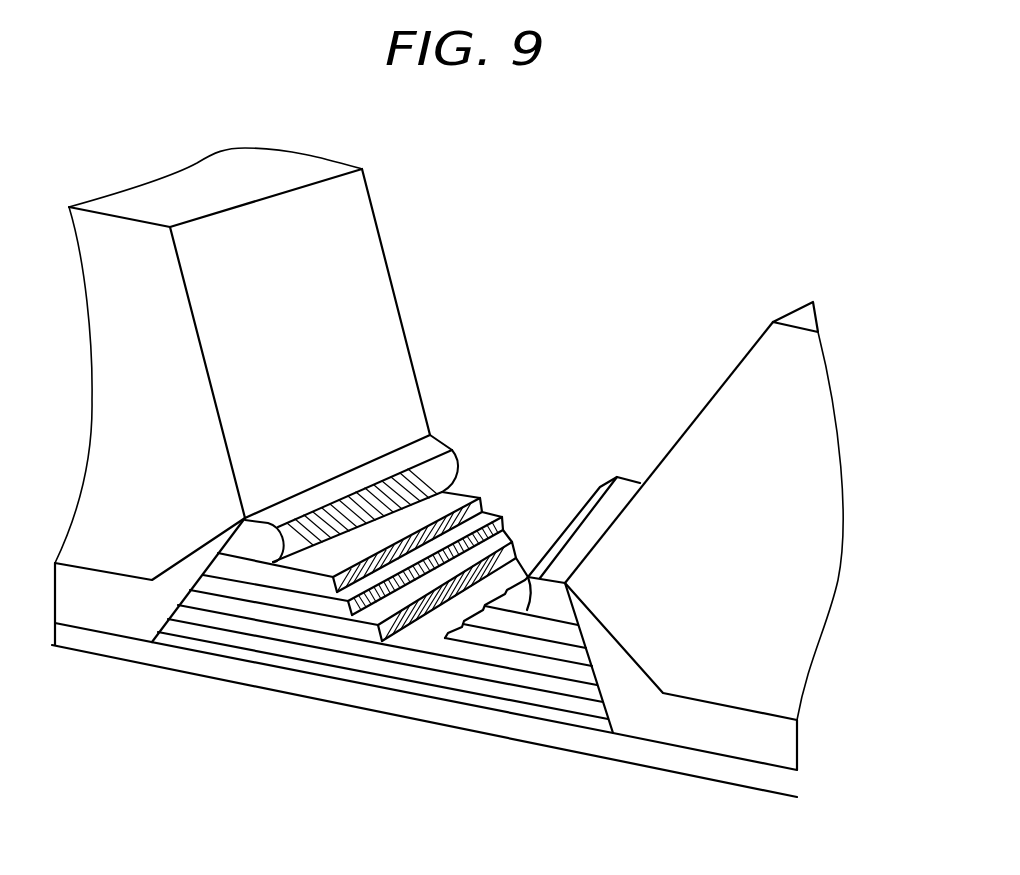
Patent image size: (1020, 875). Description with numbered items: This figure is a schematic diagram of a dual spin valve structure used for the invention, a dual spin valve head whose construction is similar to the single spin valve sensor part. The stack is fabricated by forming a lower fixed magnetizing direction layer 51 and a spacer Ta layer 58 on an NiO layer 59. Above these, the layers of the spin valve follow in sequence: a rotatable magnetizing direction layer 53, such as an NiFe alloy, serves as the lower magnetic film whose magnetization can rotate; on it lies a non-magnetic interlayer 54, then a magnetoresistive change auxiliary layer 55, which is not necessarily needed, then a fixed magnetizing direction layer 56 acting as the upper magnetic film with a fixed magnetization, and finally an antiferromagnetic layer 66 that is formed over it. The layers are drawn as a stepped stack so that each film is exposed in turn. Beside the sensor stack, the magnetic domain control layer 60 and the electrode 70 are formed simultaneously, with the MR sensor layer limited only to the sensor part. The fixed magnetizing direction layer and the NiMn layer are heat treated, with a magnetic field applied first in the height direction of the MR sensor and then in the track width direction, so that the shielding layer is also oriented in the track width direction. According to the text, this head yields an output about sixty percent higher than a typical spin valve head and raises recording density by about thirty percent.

The antiferromagnetic layer 66 is at (250, 548).
The fixed magnetizing direction layer 56 is at (268, 578).
The magnetoresistive change auxiliary layer 55 is at (313, 602).
The non-magnetic interlayer 54 is at (352, 606).
The rotatable magnetizing direction layer 53 is at (384, 642).
The spacer Ta layer 58 is at (428, 668).
The lower fixed magnetizing direction layer 51 is at (480, 694).
The NiO layer 59 is at (512, 733).
The magnetic domain control layer 60 is at (770, 740).
The electrode 70 is at (782, 458).